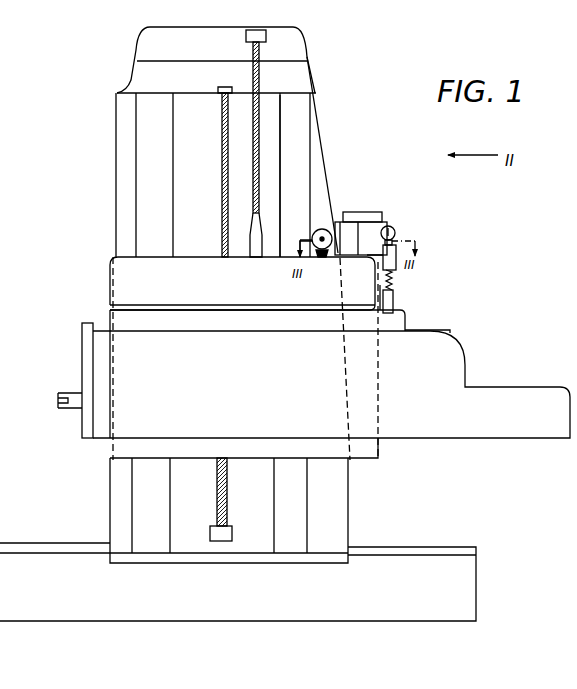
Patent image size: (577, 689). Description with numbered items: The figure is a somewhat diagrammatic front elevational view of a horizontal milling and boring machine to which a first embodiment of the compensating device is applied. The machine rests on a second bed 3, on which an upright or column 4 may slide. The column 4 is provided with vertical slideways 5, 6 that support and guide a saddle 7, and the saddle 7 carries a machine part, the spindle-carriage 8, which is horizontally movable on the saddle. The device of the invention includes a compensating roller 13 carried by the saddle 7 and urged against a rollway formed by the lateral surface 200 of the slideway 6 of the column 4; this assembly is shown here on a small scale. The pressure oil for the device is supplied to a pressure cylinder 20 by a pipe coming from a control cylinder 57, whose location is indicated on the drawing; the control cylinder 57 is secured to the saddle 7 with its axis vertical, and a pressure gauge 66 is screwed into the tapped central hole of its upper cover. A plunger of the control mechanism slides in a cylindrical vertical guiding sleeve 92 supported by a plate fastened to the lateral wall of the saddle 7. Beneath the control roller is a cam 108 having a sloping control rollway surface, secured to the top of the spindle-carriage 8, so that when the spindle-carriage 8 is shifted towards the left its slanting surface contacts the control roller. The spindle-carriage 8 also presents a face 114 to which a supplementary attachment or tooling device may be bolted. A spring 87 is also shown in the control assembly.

The second bed 3 is at (405, 572).
The column 4 is at (185, 183).
The vertical slideway 5 is at (140, 131).
The vertical slideway 6 is at (297, 122).
The saddle 7 is at (125, 283).
The spindle-carriage 8 is at (456, 378).
The compensating roller 13 is at (326, 229).
The pressure cylinder 20 is at (373, 233).
The control cylinder 57 is at (398, 258).
The pressure gauge 66 is at (397, 236).
The spring 87 is at (396, 283).
The guiding sleeve 92 is at (396, 303).
The cam 108 is at (452, 331).
The face 114 is at (81, 357).
The lateral surface 200 is at (310, 156).